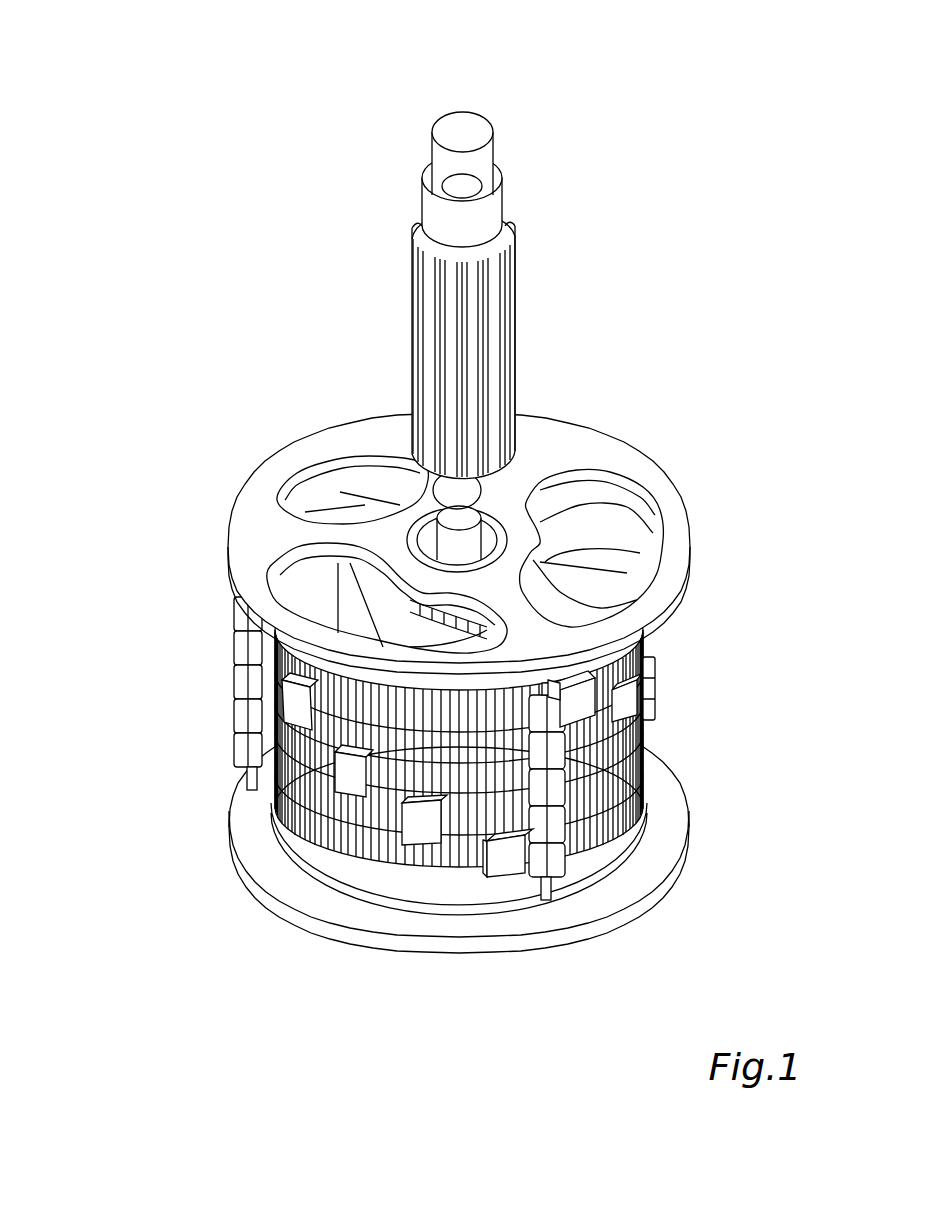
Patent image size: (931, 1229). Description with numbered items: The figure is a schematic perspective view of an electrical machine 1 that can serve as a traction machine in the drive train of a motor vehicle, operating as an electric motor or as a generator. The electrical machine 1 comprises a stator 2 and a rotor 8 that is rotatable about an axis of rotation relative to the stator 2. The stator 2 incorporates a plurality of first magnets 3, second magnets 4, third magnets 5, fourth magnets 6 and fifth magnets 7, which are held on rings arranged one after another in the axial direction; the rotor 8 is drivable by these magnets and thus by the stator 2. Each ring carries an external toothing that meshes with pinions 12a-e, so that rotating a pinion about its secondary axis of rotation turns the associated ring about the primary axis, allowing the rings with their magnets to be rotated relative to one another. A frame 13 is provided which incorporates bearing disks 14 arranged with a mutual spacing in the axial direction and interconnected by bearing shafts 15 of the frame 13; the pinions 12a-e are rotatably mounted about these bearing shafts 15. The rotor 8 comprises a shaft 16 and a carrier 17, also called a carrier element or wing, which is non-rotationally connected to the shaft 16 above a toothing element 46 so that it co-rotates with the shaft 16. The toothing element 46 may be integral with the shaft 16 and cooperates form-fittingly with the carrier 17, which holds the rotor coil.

The electrical machine 1 is at (415, 110).
The stator 2 is at (575, 515).
The first magnets 3 is at (272, 651).
The second magnets 4 is at (293, 707).
The third magnets 5 is at (352, 778).
The fourth magnets 6 is at (425, 828).
The fifth magnets 7 is at (498, 858).
The rotor 8 is at (611, 571).
The pinions 12a-e is at (236, 693).
The frame 13 is at (683, 871).
The bearing disks 14 is at (258, 523).
The bearing shafts 15 is at (249, 775).
The shaft 16 is at (455, 519).
The carrier 17 is at (370, 592).
The toothing element 46 is at (504, 293).